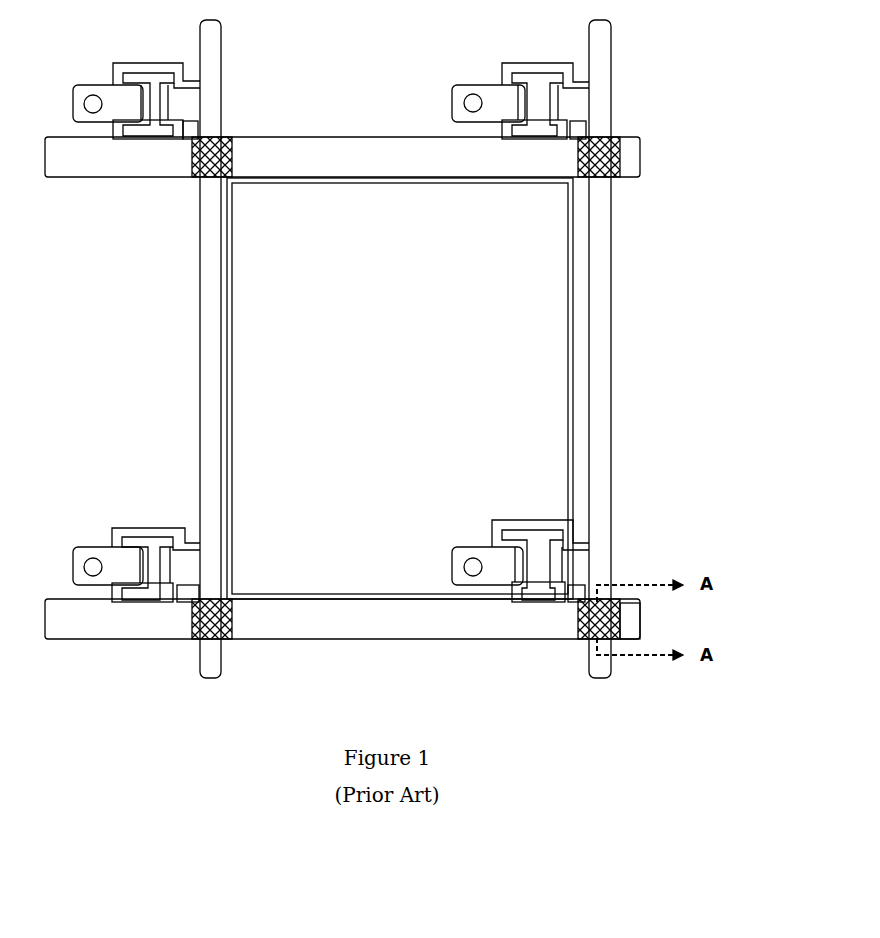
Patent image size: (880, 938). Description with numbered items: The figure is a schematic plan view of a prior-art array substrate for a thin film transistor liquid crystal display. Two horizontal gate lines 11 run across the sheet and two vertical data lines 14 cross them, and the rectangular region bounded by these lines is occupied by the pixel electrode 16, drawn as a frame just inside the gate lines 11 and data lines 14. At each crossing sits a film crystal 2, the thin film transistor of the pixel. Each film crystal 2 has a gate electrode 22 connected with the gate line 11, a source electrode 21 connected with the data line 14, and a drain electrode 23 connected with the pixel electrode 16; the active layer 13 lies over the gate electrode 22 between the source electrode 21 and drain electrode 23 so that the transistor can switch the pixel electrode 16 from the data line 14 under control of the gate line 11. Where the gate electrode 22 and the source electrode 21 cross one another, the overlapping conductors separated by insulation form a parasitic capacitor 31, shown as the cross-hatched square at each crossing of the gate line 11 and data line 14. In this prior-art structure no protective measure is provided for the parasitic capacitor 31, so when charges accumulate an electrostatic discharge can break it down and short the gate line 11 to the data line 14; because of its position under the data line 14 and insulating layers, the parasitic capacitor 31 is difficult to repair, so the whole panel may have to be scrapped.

The film crystal 2 is at (525, 560).
The gate line 11 is at (628, 612).
The active layer 13 is at (585, 640).
The data line 14 is at (598, 345).
The pixel electrode 16 is at (550, 273).
The source electrode 21 is at (575, 563).
The gate electrode 22 is at (540, 600).
The drain electrode 23 is at (493, 565).
The parasitic capacitor 31 is at (612, 638).